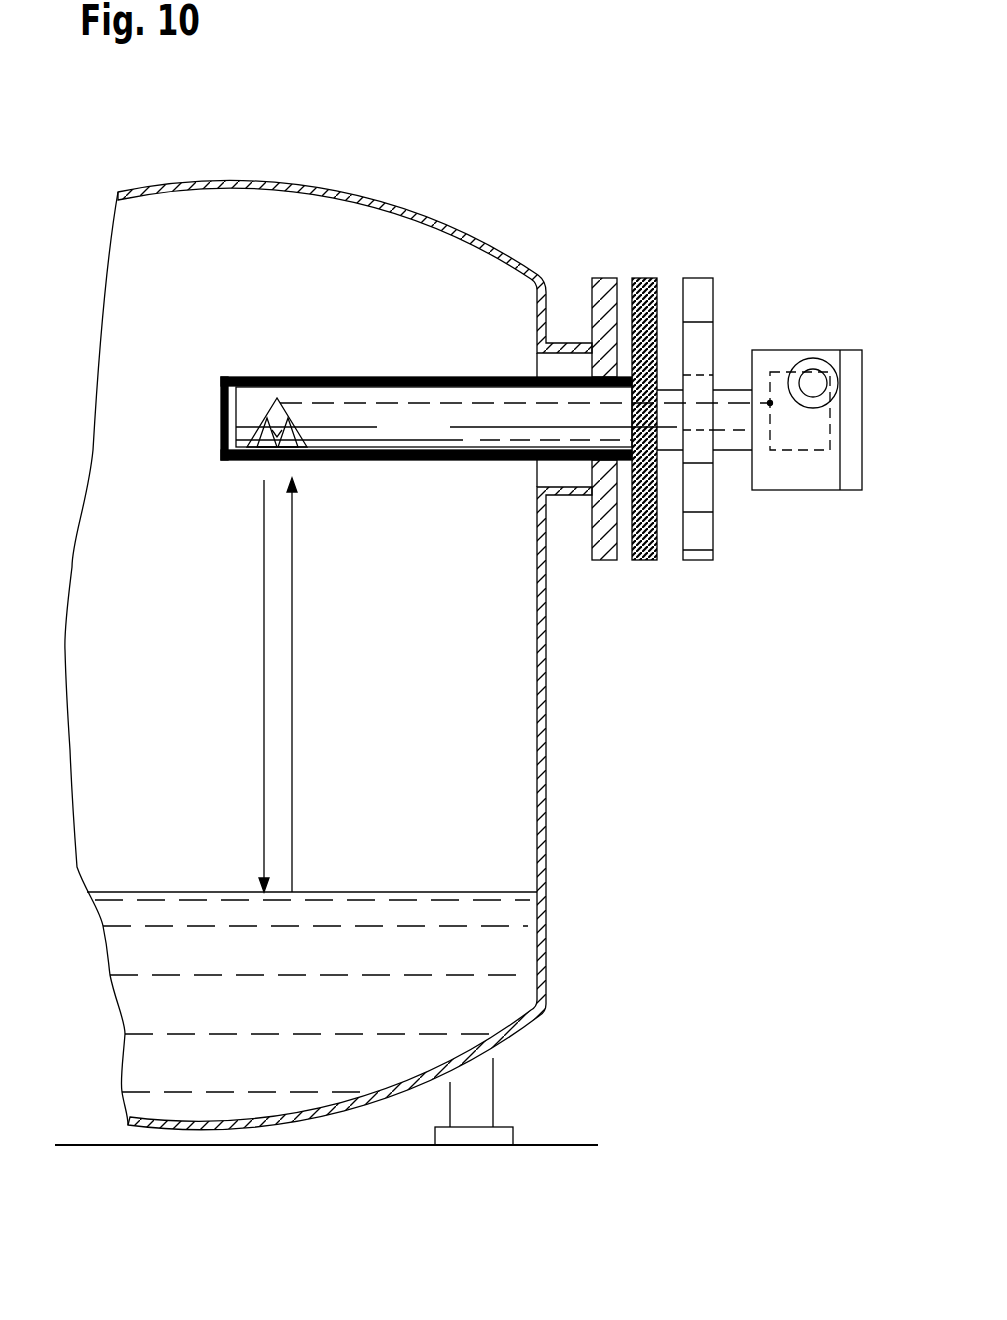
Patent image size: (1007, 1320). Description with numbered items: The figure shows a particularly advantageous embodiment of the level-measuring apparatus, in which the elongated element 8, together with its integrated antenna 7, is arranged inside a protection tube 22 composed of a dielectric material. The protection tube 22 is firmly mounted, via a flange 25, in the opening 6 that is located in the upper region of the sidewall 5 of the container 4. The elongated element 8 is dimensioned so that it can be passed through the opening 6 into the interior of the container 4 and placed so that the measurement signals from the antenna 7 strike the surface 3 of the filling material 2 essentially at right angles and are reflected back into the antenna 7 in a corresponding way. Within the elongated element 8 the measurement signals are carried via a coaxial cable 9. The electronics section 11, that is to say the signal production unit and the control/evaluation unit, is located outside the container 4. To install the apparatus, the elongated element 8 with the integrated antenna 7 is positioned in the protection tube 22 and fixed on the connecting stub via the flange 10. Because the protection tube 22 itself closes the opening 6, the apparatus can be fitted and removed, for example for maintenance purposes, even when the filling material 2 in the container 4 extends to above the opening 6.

The filling material 2 is at (510, 940).
The surface 3 is at (123, 892).
The container 4 is at (168, 668).
The sidewall 5 is at (545, 687).
The opening 6 is at (580, 470).
The antenna 7 is at (253, 463).
The elongated element 8 is at (410, 393).
The coaxial cable 9 is at (470, 403).
The flange 10 is at (697, 295).
The electronics section 11 is at (813, 427).
The protection tube 22 is at (243, 378).
The flange 25 is at (658, 288).